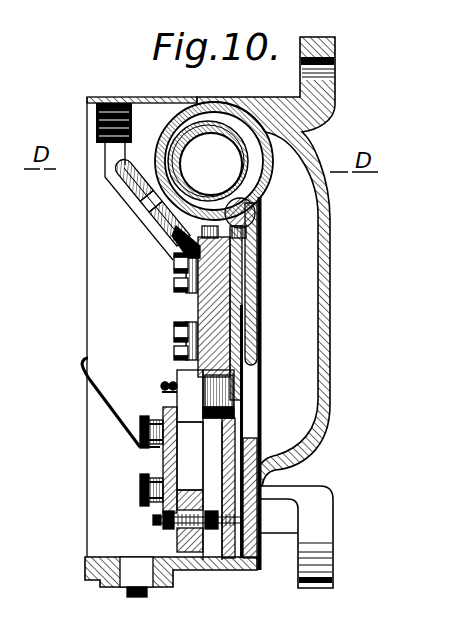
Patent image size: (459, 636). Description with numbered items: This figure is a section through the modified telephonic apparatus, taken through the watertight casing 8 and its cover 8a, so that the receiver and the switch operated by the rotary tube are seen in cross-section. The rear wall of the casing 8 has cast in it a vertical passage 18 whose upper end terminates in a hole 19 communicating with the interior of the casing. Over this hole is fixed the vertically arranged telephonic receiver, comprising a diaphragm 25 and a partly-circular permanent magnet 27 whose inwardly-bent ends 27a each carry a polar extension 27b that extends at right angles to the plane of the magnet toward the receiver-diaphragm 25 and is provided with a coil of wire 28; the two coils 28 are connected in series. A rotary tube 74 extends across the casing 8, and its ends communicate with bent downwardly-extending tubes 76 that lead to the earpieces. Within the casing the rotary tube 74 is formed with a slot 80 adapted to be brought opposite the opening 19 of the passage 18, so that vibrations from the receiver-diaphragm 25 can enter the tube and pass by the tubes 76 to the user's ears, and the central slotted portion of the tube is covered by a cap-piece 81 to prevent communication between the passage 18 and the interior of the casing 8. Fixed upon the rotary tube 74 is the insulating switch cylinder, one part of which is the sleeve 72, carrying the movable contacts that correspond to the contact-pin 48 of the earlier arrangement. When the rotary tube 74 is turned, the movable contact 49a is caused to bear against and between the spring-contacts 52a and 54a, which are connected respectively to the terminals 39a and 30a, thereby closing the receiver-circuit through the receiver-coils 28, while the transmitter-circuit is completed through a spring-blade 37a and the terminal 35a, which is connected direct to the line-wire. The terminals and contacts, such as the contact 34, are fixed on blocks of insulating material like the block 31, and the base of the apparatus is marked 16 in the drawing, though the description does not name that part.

The casing 8 is at (223, 98).
The cover 8a is at (253, 313).
The base 16 is at (171, 577).
The vertical passage 18 is at (289, 300).
The hole 19 is at (252, 428).
The diaphragm 25 is at (238, 376).
The permanent magnet 27 is at (177, 534).
The inwardly-bent ends 27a is at (199, 483).
The polar extension 27b is at (243, 401).
The coil of wire 28 is at (205, 396).
The terminal 30a is at (176, 290).
The block 31 is at (166, 459).
The contact 34 is at (222, 313).
The terminal 35a is at (162, 410).
The spring-blade 37a is at (121, 406).
The terminal 39a is at (176, 322).
The contact-pin 48 is at (163, 210).
The movable contact 49a is at (262, 210).
The spring-contact 52a is at (113, 176).
The spring-contact 54a is at (138, 182).
The insulating switch cylinder part 72 is at (151, 195).
The rotary tube 74 is at (208, 161).
The bent downwardly-extending tube 76 is at (211, 164).
The slot 80 is at (244, 153).
The cap-piece 81 is at (172, 136).